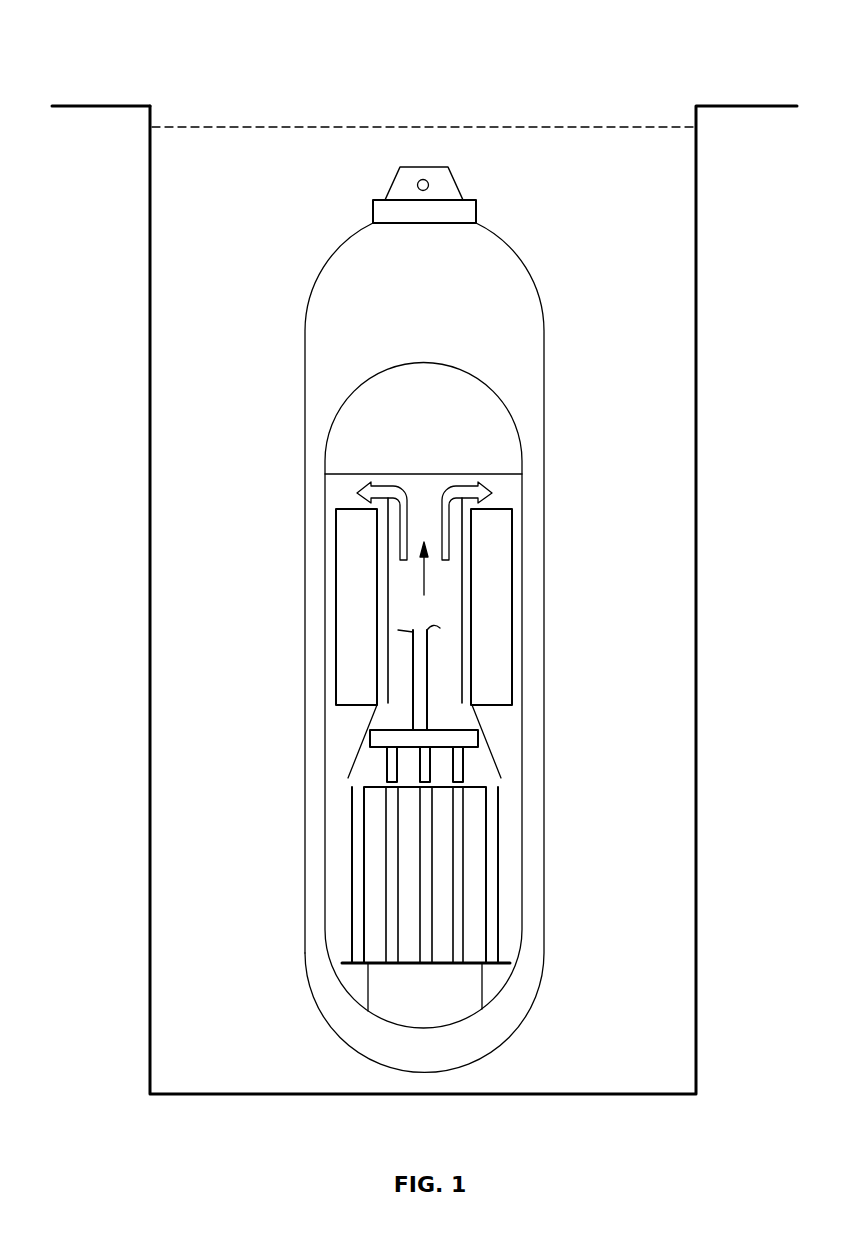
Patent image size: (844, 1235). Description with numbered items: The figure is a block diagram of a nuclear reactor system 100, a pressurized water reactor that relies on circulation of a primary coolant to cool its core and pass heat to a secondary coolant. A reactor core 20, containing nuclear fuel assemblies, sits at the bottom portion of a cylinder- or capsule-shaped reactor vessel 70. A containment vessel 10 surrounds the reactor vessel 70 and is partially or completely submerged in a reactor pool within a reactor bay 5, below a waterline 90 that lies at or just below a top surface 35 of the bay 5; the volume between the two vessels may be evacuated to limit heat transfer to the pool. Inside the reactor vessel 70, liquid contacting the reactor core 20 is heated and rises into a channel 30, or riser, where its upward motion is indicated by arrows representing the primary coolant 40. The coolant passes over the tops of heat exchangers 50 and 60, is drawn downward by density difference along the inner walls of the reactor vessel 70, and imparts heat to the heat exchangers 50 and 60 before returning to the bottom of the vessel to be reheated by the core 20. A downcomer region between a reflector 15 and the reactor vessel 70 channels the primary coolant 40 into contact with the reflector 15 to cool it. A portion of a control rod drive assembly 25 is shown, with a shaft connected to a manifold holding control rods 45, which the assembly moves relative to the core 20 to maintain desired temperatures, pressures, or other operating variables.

The nuclear reactor system 100 is at (110, 53).
The reactor bay 5 is at (697, 548).
The top surface of the bay 35 is at (120, 106).
The waterline 90 is at (590, 128).
The containment vessel 10 is at (400, 1072).
The reactor vessel 70 is at (523, 907).
The heat exchanger 50 is at (357, 583).
The heat exchanger 60 is at (488, 548).
The channel 30 is at (405, 597).
The primary coolant 40 is at (427, 567).
The control rod drive assembly 25 is at (444, 694).
The control rods 45 is at (385, 762).
The reflector 15 is at (350, 815).
The reactor core 20 is at (365, 875).